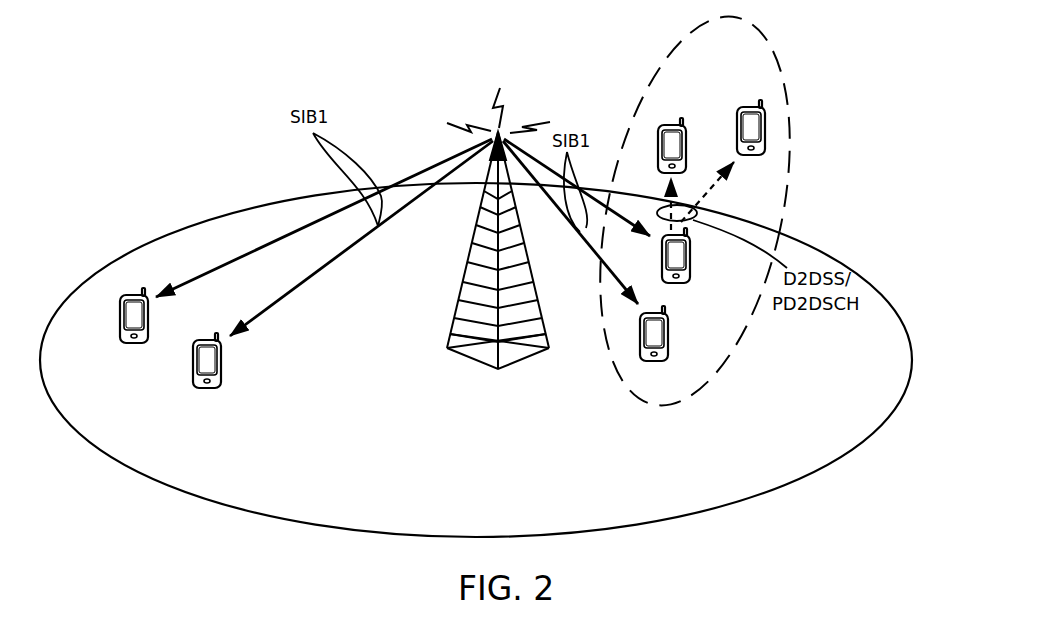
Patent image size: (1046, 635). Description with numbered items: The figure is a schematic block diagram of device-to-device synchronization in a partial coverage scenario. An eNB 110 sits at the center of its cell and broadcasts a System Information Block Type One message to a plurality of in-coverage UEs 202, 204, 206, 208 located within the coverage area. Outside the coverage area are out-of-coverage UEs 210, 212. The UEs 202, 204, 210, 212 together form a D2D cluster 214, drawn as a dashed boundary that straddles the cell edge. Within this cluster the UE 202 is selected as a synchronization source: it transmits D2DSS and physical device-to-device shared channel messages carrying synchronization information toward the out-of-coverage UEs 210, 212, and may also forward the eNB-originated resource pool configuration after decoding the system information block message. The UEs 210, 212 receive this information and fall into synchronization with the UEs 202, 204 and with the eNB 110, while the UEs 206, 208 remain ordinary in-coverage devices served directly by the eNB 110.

The eNB 110 is at (458, 338).
The UE 202 is at (685, 282).
The UE 204 is at (655, 362).
The UE 206 is at (122, 322).
The UE 208 is at (192, 365).
The UE 210 is at (672, 125).
The UE 212 is at (765, 127).
The D2D cluster 214 is at (790, 187).